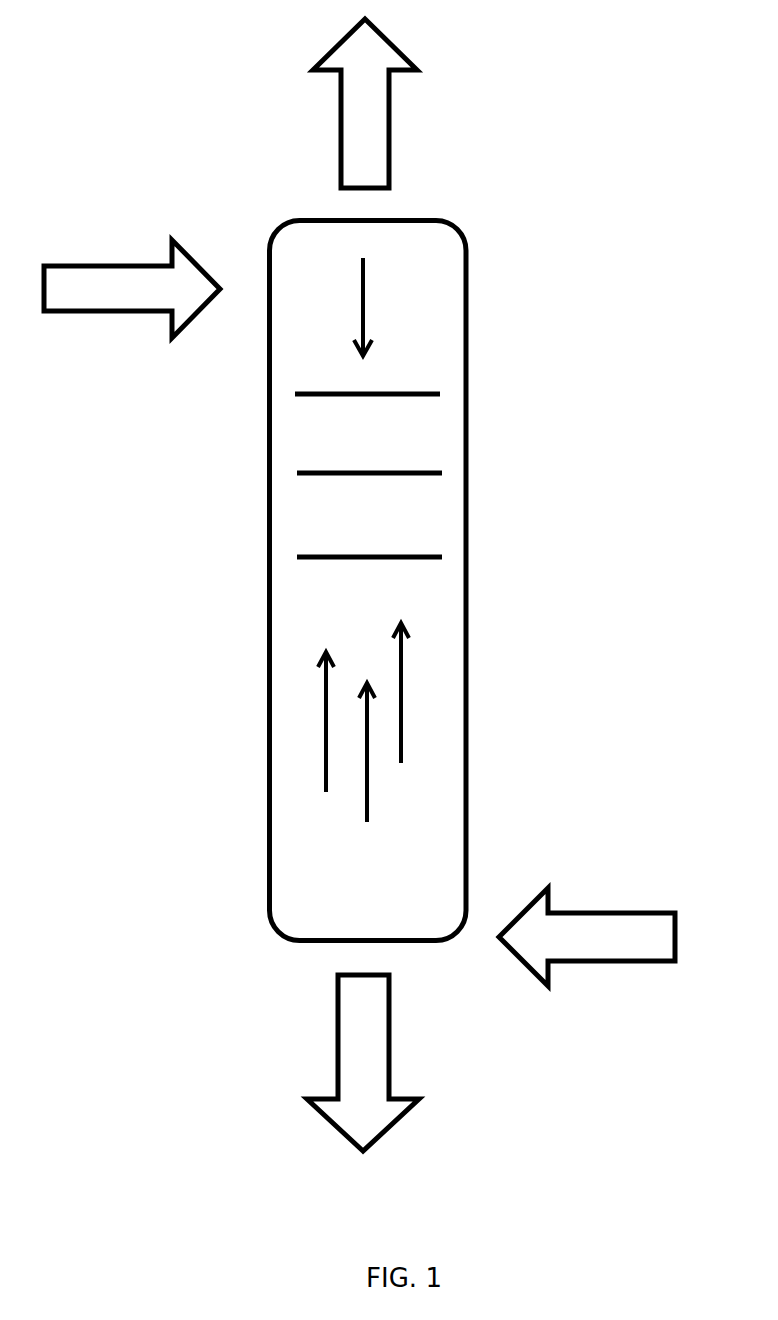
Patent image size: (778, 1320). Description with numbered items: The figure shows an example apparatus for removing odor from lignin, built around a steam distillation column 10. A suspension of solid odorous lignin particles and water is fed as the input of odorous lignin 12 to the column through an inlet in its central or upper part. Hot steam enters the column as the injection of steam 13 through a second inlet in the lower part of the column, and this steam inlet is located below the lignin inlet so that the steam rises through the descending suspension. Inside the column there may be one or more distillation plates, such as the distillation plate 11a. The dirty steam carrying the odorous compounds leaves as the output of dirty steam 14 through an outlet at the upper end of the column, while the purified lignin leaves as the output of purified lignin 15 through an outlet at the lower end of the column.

The steam distillation column 10 is at (468, 278).
The distillation plate 11a is at (402, 559).
The input of odorous lignin 12 is at (132, 289).
The injection of steam 13 is at (587, 937).
The output of dirty steam 14 is at (365, 103).
The output of purified lignin 15 is at (363, 1063).